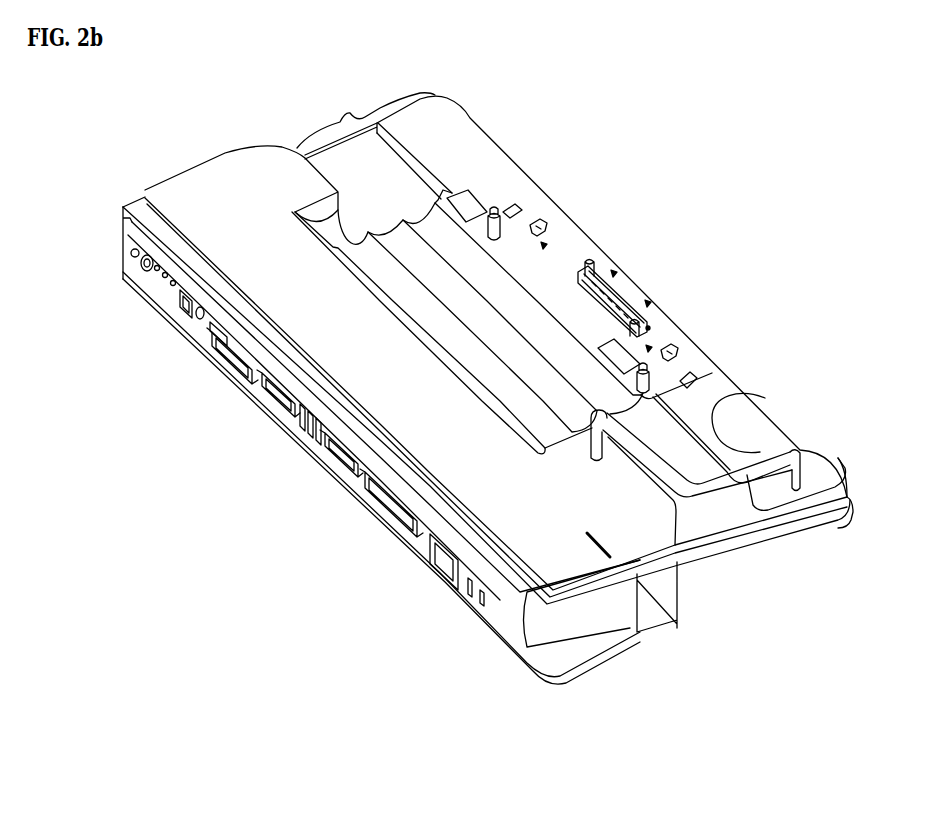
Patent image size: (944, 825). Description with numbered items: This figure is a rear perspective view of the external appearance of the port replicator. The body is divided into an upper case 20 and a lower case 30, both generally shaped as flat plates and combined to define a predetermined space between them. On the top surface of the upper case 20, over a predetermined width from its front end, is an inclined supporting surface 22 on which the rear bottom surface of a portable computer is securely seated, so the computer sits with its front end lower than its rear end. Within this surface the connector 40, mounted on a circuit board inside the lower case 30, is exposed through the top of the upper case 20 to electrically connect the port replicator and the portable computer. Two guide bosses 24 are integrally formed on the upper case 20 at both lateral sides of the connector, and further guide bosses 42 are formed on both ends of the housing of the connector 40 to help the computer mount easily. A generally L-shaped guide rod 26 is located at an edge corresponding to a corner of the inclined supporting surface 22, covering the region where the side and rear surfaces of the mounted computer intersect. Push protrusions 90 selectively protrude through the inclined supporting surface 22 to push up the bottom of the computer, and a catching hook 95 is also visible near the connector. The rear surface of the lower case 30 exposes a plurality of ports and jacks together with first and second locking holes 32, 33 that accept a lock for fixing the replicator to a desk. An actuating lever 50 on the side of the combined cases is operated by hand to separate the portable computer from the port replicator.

The upper case 20 is at (737, 543).
The inclined supporting surface 22 is at (572, 292).
The guide bosses 24 is at (493, 213).
The guide rod 26 is at (797, 477).
The lower case 30 is at (703, 588).
The first locking hole 32 is at (468, 590).
The second locking hole 33 is at (480, 604).
The connector 40 is at (614, 294).
The guide bosses 42 is at (589, 268).
The actuating lever 50 is at (593, 643).
The push protrusions 90 is at (520, 208).
The catching hook 95 is at (540, 224).